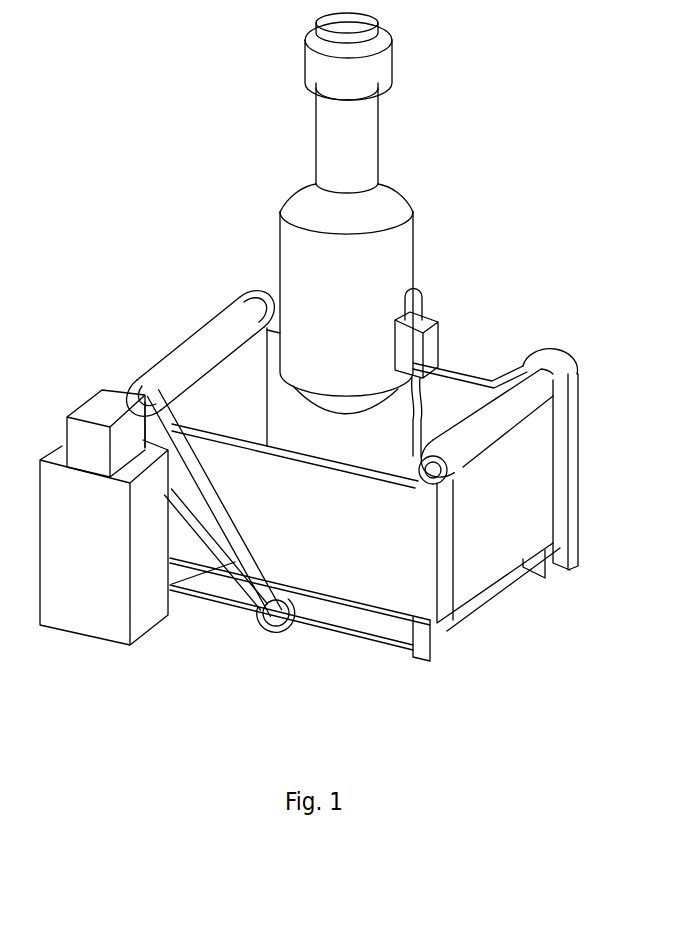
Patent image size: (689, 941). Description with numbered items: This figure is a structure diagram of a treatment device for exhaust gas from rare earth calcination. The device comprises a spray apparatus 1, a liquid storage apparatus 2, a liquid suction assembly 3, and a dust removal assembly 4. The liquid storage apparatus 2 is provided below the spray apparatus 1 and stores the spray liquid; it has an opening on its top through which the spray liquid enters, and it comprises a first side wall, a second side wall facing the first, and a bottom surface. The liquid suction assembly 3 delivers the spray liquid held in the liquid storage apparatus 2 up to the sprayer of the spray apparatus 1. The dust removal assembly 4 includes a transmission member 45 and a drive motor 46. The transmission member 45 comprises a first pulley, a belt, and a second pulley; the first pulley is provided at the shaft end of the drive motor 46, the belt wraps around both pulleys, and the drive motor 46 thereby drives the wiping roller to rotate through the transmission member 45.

The spray apparatus 1 is at (386, 206).
The liquid storage apparatus 2 is at (375, 570).
The liquid suction assembly 3 is at (425, 414).
The dust removal assembly 4 is at (180, 332).
The transmission member 45 is at (244, 540).
The drive motor 46 is at (98, 407).